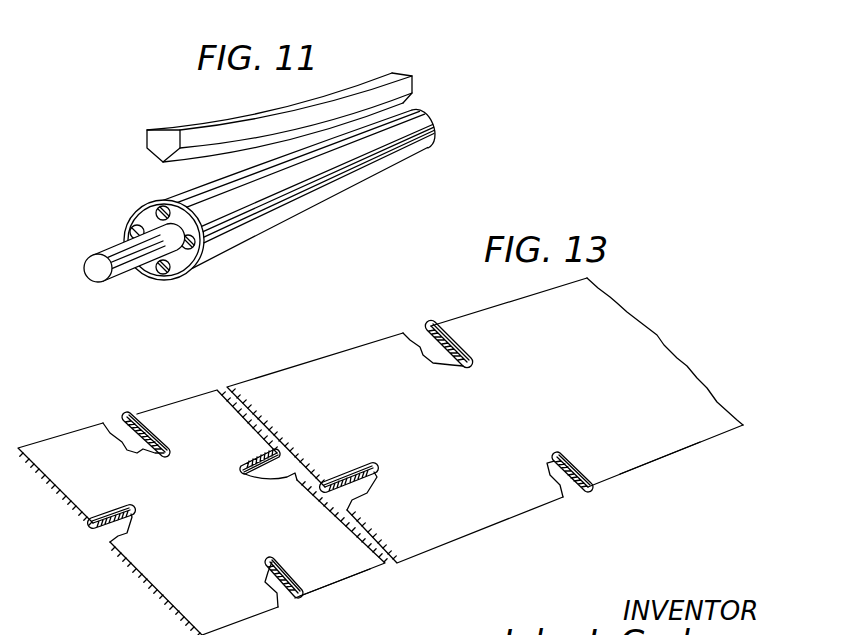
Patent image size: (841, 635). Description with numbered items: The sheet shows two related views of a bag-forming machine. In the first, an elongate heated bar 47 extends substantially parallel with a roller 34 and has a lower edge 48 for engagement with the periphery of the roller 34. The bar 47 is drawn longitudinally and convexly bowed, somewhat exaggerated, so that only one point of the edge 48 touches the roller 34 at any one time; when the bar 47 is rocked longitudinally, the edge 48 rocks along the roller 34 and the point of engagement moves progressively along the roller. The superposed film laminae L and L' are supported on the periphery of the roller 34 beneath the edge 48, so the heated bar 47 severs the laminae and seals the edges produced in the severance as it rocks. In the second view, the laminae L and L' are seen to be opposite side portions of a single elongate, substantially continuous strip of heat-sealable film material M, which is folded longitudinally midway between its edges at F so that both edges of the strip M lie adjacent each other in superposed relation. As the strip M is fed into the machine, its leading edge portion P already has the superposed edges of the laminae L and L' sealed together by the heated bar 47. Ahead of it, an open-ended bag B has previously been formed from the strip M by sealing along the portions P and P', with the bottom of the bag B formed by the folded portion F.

In FIG. 11, the heated bar 47 is at (232, 132).
In FIG. 11, the lower edge 48 is at (200, 158).
In FIG. 11, the roller 34 is at (428, 123).
In FIG. 13, the open-ended bag B is at (172, 410).
In FIG. 13, the strip of heat-sealable film material M is at (320, 360).
In FIG. 13, the leading edge portion P is at (201, 480).
In FIG. 13, the sealed portion P' is at (292, 464).
In FIG. 13, the film lamina L is at (428, 334).
In FIG. 13, the film lamina L' is at (509, 302).
In FIG. 13, the folded portion F is at (667, 457).